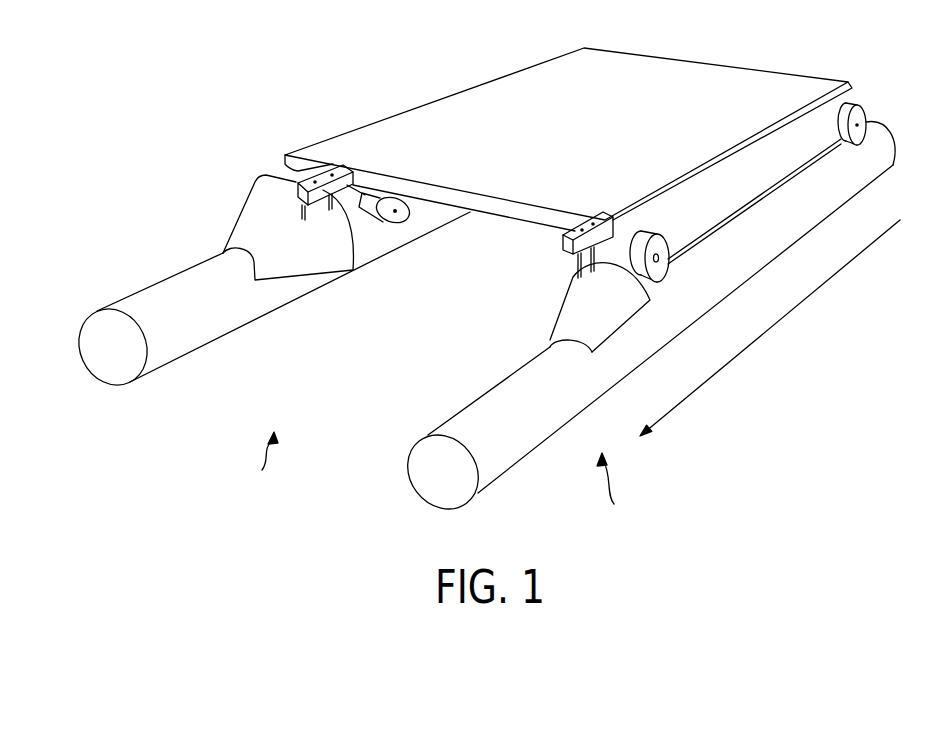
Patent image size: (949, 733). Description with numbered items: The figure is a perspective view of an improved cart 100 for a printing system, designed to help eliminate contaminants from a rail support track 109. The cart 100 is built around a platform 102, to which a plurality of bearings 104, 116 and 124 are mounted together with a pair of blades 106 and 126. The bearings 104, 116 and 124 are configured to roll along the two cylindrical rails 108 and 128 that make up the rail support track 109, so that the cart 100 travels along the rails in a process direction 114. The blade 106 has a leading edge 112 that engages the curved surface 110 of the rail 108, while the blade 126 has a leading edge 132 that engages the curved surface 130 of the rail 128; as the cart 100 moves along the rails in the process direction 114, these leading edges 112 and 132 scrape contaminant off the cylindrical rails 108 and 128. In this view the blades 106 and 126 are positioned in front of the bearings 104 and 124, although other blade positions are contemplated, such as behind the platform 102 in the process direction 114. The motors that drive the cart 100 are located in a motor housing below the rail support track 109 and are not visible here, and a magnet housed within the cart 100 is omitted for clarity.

The cart 100 is at (263, 468).
The platform 102 is at (422, 118).
The bearing 104 is at (652, 240).
The blade 106 is at (570, 333).
The cylindrical rail 108 is at (472, 400).
The rail support track 109 is at (613, 492).
The curved surface 110 is at (545, 372).
The leading edge 112 is at (592, 353).
The process direction 114 is at (770, 327).
The bearing 116 is at (855, 104).
The bearing 124 is at (395, 213).
The blade 126 is at (312, 278).
The cylindrical rail 128 is at (180, 273).
The curved surface 130 is at (235, 307).
The leading edge 132 is at (243, 253).